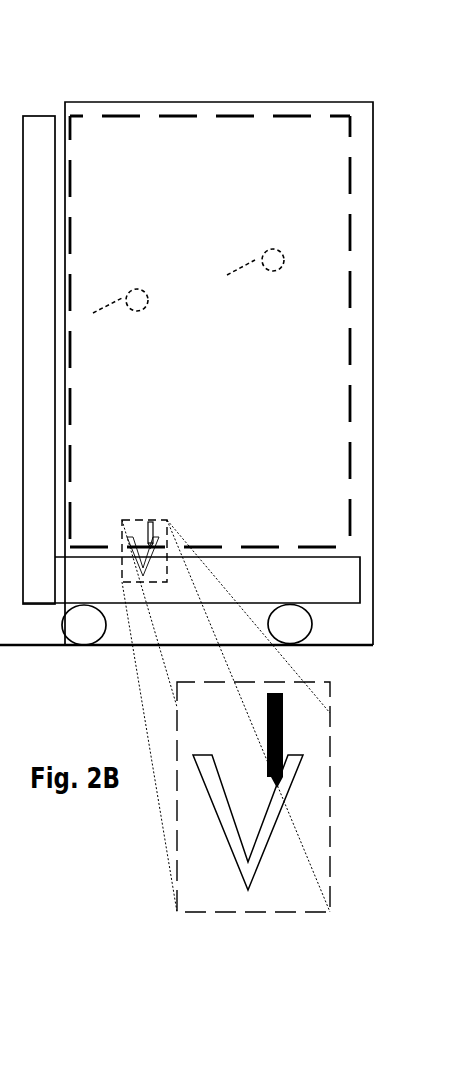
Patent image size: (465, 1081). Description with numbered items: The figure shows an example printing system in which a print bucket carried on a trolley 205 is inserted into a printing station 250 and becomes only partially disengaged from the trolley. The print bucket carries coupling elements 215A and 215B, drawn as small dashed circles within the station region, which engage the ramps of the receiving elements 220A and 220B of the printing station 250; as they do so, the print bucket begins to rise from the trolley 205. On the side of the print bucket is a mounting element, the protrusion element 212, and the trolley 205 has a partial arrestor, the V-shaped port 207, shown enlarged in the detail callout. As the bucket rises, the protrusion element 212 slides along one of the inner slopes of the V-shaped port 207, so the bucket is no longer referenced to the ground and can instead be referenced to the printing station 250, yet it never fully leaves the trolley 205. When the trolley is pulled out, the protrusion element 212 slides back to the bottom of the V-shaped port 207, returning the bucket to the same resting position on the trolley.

The trolley 205 is at (31, 116).
The printing station 250 is at (203, 102).
The receiving element 220A is at (113, 302).
The coupling element 215A is at (131, 292).
The receiving element 220B is at (249, 267).
The coupling element 215B is at (266, 252).
The protrusion element 212 is at (150, 522).
The V-shaped port 207 is at (168, 521).